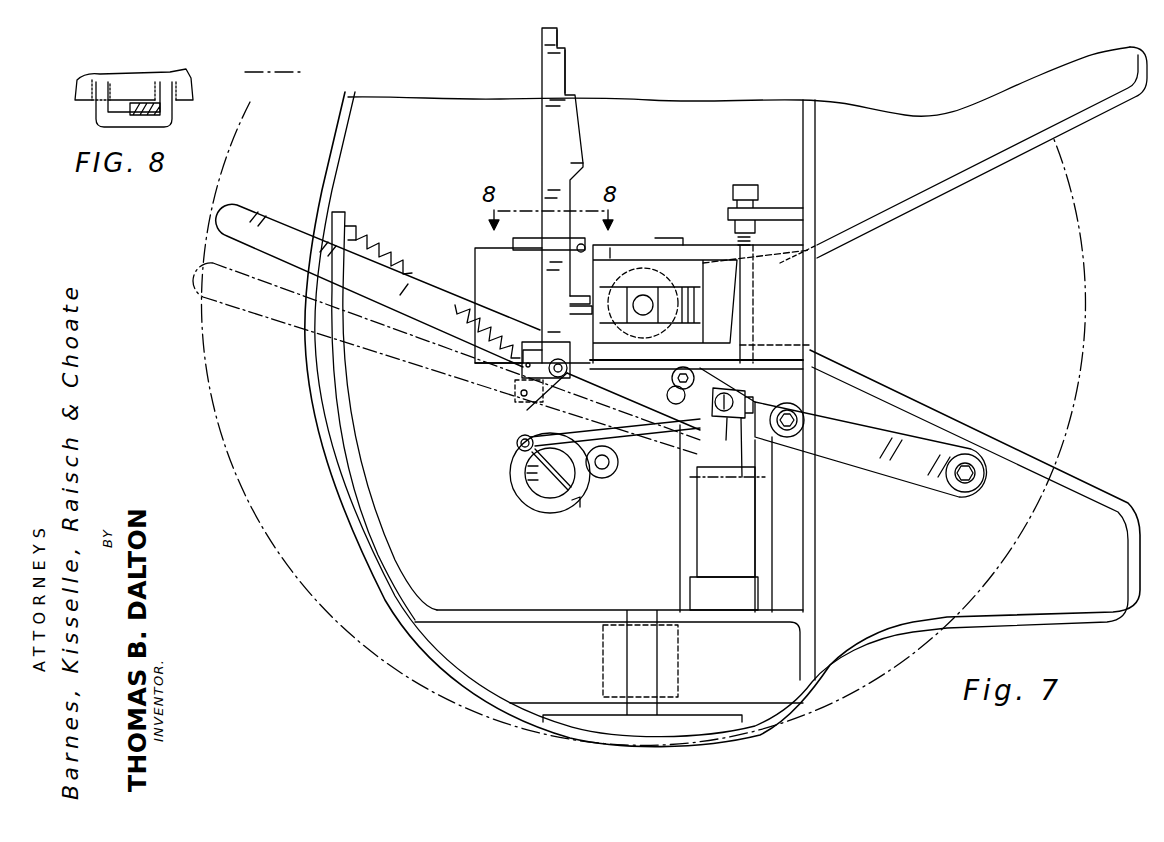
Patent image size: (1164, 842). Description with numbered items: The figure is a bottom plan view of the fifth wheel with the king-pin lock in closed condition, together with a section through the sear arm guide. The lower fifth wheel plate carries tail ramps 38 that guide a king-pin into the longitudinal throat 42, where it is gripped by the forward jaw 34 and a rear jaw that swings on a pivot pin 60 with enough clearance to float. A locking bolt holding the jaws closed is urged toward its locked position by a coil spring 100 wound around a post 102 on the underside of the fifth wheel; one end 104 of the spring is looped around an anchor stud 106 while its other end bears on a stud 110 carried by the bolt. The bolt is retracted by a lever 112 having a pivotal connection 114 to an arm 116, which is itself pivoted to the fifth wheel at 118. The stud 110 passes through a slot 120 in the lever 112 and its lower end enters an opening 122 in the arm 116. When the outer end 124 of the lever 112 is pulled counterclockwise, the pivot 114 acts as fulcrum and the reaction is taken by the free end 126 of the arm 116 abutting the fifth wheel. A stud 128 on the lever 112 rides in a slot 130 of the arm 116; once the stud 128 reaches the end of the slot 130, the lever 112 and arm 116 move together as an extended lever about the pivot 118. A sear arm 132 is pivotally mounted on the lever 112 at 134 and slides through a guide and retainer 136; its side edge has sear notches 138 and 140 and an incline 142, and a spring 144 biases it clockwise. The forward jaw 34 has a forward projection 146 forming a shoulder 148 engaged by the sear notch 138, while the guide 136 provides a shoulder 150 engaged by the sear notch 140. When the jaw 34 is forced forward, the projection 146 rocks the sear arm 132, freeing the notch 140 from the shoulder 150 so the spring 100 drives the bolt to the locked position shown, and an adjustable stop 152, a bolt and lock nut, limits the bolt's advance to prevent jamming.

In FIG. 7, the forward jaw 34 is at (618, 265).
In FIG. 7, the tail ramps 38 is at (943, 160).
In FIG. 7, the longitudinal throat 42 is at (738, 345).
In FIG. 7, the pivot pin 60 is at (655, 240).
In FIG. 7, the coil spring 100 is at (543, 513).
In FIG. 7, the post 102 is at (526, 475).
In FIG. 7, the spring end 104 is at (601, 478).
In FIG. 7, the anchor stud 106 is at (612, 464).
In FIG. 7, the stud 110 is at (733, 413).
In FIG. 7, the lever 112 is at (404, 318).
In FIG. 7, the pivotal connection 114 is at (804, 424).
In FIG. 7, the arm 116 is at (870, 462).
In FIG. 7, the pivot 118 is at (968, 467).
In FIG. 7, the slot 120 is at (748, 403).
In FIG. 7, the opening 122 is at (752, 474).
In FIG. 7, the outer end 124 is at (255, 222).
In FIG. 7, the free end 126 is at (680, 365).
In FIG. 7, the stud 128 is at (673, 381).
In FIG. 7, the slot 130 is at (668, 398).
In FIG. 8, the sear arm 132 is at (144, 105).
In FIG. 7, the sear arm 132 is at (547, 136).
In FIG. 7, the pivotal mounting 134 is at (540, 401).
In FIG. 8, the guide and retainer 136 is at (96, 114).
In FIG. 7, the guide and retainer 136 is at (536, 252).
In FIG. 7, the sear notch 138 is at (570, 93).
In FIG. 7, the sear notch 140 is at (564, 50).
In FIG. 7, the incline 142 is at (580, 180).
In FIG. 7, the spring 144 is at (402, 270).
In FIG. 7, the forward projection 146 is at (578, 301).
In FIG. 7, the shoulder 148 is at (582, 310).
In FIG. 7, the shoulder 150 is at (598, 236).
In FIG. 7, the adjustable stop 152 is at (740, 236).